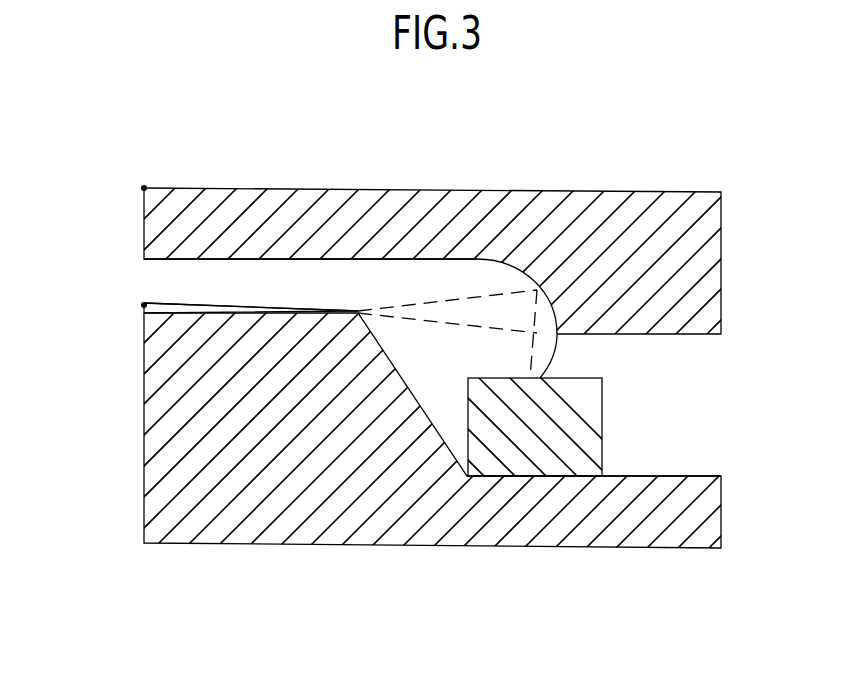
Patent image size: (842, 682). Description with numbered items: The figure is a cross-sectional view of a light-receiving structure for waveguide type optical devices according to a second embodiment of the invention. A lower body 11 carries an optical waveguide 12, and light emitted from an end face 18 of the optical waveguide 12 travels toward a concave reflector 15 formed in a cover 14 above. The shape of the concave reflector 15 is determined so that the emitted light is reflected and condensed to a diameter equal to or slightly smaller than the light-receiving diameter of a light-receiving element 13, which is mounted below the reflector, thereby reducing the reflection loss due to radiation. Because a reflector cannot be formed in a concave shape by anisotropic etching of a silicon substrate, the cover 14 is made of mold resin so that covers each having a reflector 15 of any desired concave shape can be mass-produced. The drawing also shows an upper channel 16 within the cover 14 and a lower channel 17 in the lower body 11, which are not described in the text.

The lower body / substrate 11 is at (178, 465).
The optical waveguide 12 is at (143, 309).
The light-receiving element 13 is at (605, 432).
The cover 14 is at (710, 233).
The concave reflector 15 is at (547, 287).
The upper channel 16 is at (200, 270).
The lower channel 17 is at (645, 480).
The end face 18 is at (370, 303).